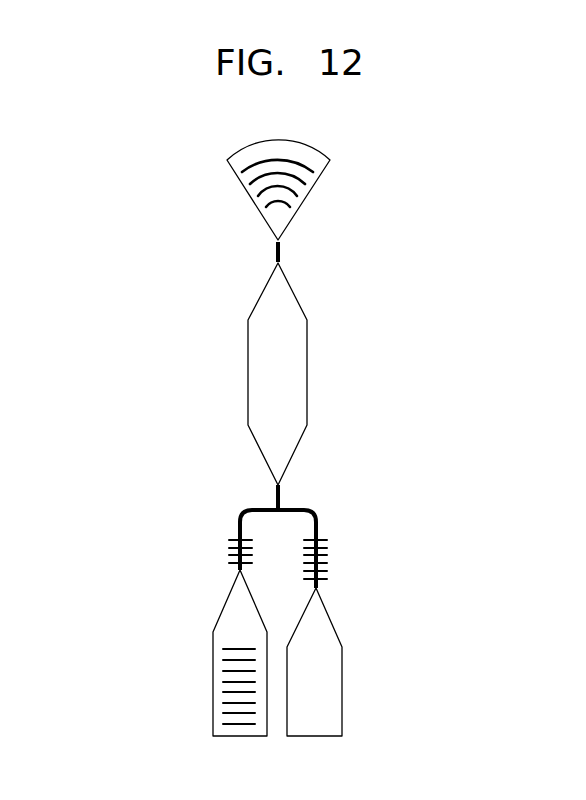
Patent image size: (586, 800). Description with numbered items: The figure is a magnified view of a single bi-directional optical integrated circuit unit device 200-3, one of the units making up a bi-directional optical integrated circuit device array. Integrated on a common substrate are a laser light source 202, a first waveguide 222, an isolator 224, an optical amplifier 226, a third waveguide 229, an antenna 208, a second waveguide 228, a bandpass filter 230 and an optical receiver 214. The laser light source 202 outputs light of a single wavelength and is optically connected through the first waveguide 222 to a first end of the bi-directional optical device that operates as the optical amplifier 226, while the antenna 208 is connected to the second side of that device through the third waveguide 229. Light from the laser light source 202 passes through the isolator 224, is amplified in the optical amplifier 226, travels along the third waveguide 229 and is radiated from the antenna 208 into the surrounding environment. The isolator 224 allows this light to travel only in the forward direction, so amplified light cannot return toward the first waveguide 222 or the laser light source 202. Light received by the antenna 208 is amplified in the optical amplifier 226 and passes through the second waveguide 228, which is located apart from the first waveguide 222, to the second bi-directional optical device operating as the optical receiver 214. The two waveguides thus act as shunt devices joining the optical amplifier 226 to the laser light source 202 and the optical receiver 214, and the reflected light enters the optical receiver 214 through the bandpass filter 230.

The bi-directional optical integrated circuit unit device 200-3 is at (410, 167).
The antenna 208 is at (255, 188).
The third waveguide 229 is at (282, 252).
The optical amplifier 226 is at (263, 371).
The first waveguide 222 is at (243, 514).
The second waveguide 228 is at (320, 527).
The isolator 224 is at (230, 553).
The bandpass filter 230 is at (328, 580).
The laser light source 202 is at (222, 685).
The optical receiver 214 is at (333, 685).